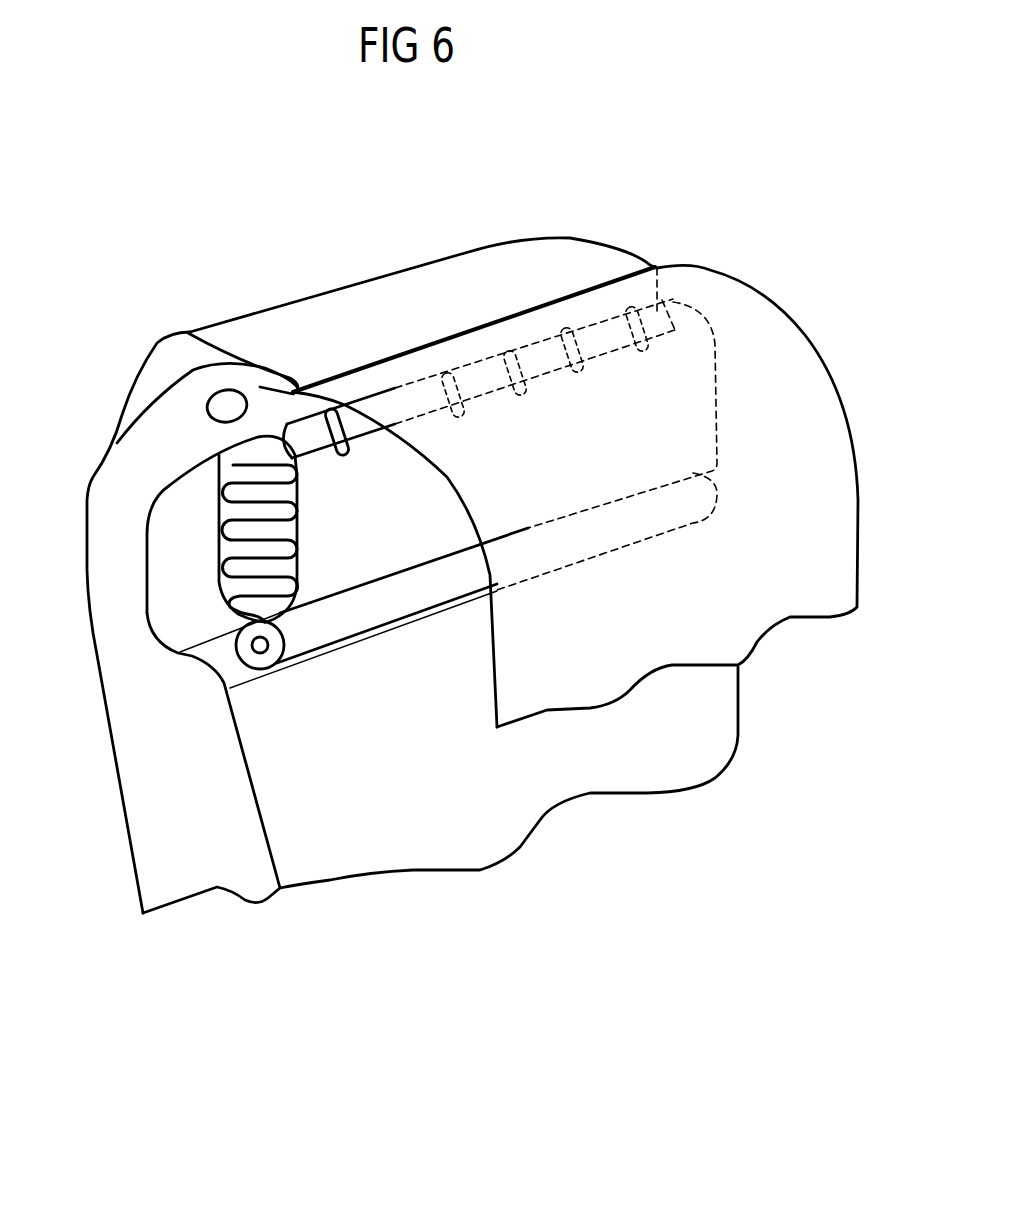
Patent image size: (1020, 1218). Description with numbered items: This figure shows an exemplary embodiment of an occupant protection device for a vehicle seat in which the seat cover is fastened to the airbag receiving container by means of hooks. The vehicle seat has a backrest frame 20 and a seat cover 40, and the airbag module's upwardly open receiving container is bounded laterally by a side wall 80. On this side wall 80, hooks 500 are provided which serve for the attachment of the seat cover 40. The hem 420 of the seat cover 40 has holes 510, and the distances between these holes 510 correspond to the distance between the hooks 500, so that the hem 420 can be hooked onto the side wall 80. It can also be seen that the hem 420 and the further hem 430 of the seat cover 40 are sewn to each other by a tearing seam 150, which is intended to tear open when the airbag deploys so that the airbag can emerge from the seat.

The backrest frame 20 is at (215, 910).
The seat cover 40 is at (782, 647).
The side wall 80 is at (308, 575).
The tearing seam 150 is at (588, 291).
The hem 420 is at (295, 412).
The further hem 430 is at (280, 379).
The hooks 500 is at (347, 412).
The holes 510 is at (318, 432).